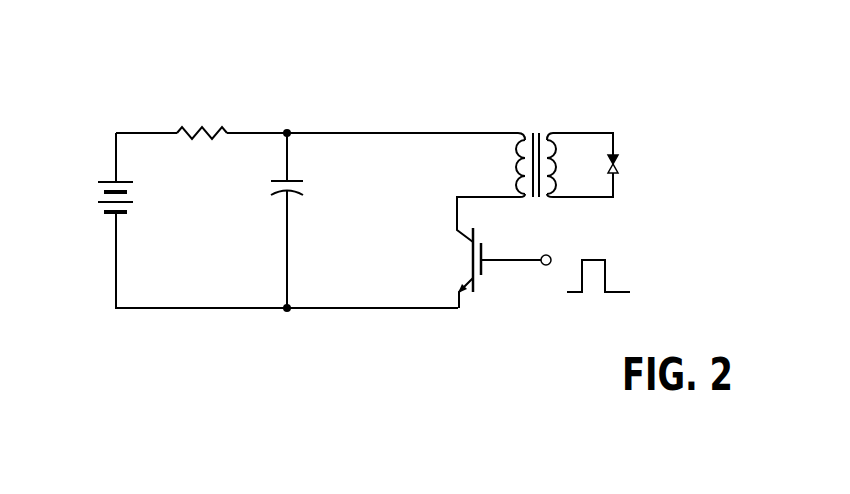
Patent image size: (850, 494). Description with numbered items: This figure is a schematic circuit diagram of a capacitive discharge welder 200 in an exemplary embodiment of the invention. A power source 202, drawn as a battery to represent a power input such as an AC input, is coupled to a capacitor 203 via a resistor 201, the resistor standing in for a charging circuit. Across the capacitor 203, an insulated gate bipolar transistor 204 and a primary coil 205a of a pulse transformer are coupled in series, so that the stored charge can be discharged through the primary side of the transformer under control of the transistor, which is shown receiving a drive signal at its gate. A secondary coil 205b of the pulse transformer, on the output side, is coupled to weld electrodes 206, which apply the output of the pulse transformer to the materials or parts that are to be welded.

The capacitive discharge welder 200 is at (701, 103).
The resistor 201 is at (197, 130).
The power source 202 is at (101, 181).
The capacitor 203 is at (296, 180).
The insulated gate bipolar transistor 204 is at (476, 281).
The primary coil 205a is at (519, 130).
The secondary coil 205b is at (544, 198).
The weld electrodes 206 is at (618, 158).